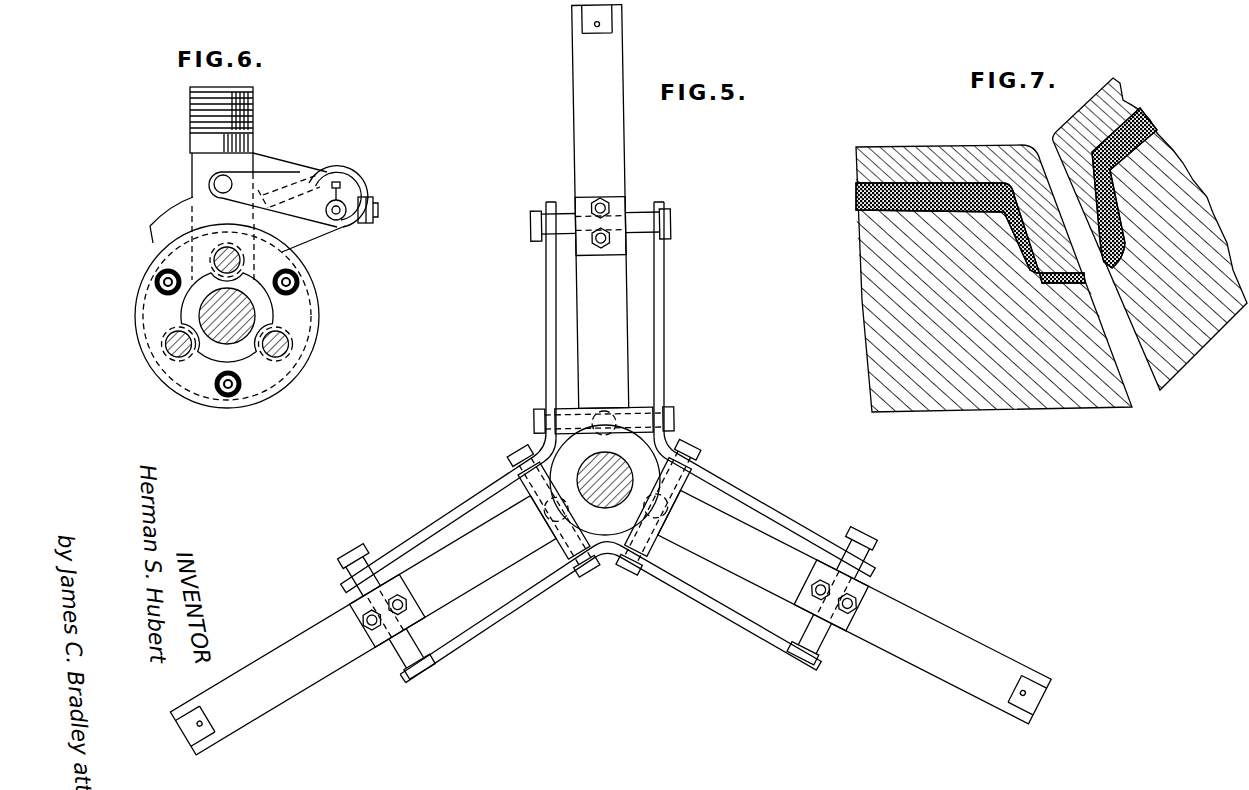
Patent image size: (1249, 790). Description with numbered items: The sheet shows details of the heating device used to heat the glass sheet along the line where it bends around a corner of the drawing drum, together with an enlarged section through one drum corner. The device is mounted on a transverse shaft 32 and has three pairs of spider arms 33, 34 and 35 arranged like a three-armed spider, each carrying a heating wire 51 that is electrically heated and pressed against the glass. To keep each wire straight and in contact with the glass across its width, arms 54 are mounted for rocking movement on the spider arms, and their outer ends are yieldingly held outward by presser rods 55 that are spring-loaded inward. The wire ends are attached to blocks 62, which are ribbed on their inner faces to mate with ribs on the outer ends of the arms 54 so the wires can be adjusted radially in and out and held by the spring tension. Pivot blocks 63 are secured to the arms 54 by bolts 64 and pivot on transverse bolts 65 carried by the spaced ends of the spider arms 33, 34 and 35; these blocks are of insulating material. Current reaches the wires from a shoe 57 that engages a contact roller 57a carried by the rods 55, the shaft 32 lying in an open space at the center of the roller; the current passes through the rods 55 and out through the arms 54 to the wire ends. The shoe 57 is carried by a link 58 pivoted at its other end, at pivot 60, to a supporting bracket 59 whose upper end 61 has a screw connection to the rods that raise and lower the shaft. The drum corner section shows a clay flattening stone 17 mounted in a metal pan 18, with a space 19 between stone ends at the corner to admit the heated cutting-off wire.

In FIG. 7, the flattening stones 17 is at (1025, 398).
In FIG. 7, the metal pans or plates 18 is at (916, 147).
In FIG. 7, the spaces 19 is at (1142, 385).
In FIG. 5, the transverse shaft 32 is at (623, 467).
In FIG. 6, the transverse shaft 32 is at (247, 313).
In FIG. 5, the spider arm 33 is at (546, 306).
In FIG. 5, the spider arm 34 is at (436, 538).
In FIG. 5, the spider arm 35 is at (748, 617).
In FIG. 5, the heating wires 51 is at (602, 24).
In FIG. 5, the arms 54 is at (580, 115).
In FIG. 5, the presser rods 55 is at (617, 413).
In FIG. 6, the presser rods 55 is at (213, 250).
In FIG. 6, the shoe 57 is at (178, 211).
In FIG. 6, the contact roller 57a is at (338, 402).
In FIG. 6, the links 58 is at (292, 186).
In FIG. 6, the supporting brackets 59 is at (290, 160).
In FIG. 6, the pivot 60 is at (345, 206).
In FIG. 6, the upper ends 61 is at (253, 122).
In FIG. 5, the blocks 62 is at (578, 22).
In FIG. 5, the pivot blocks 63 is at (628, 197).
In FIG. 5, the bolts 64 is at (596, 236).
In FIG. 5, the transverse bolts 65 is at (668, 220).